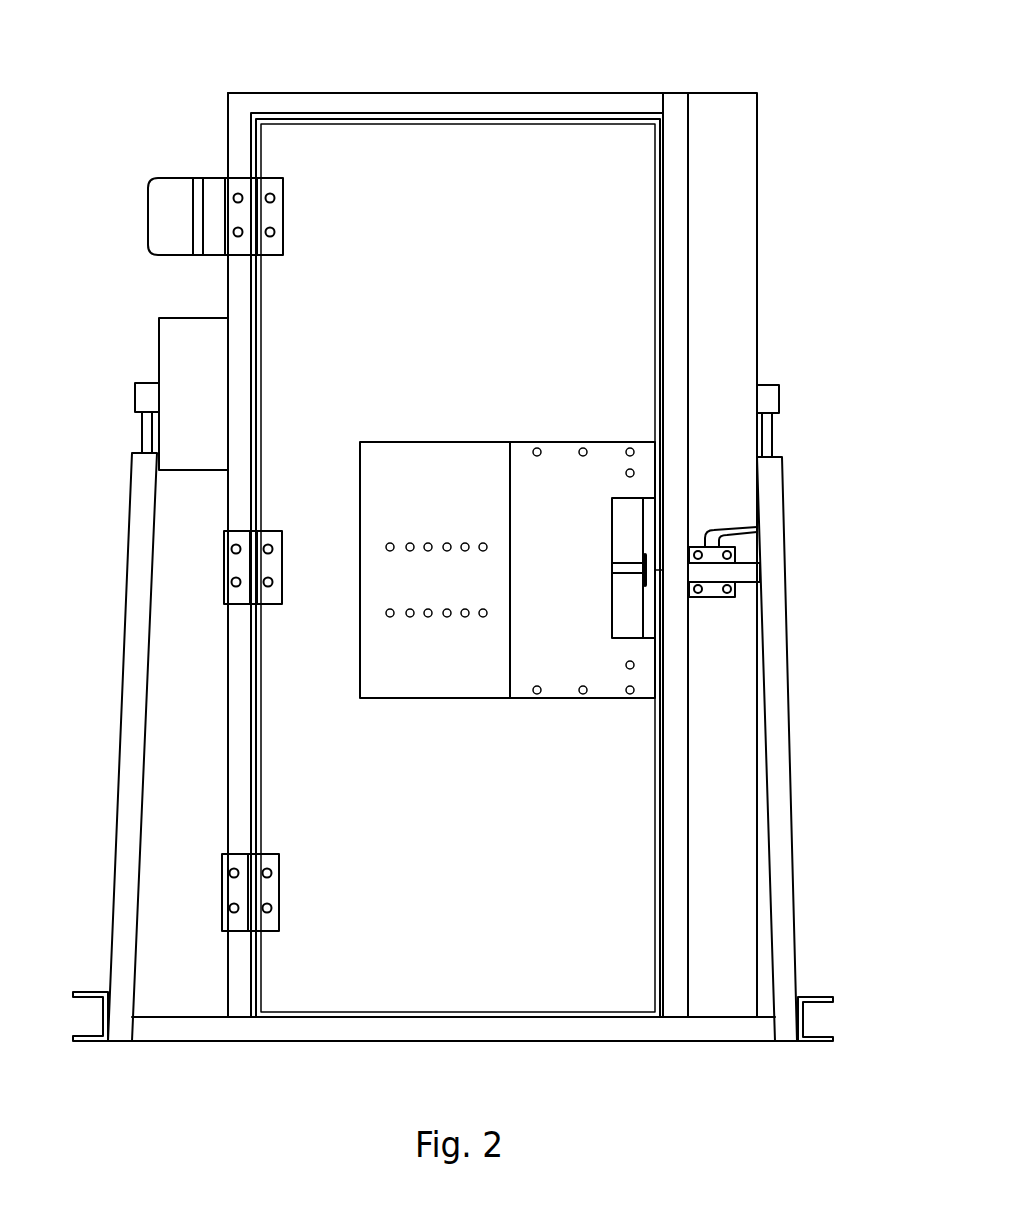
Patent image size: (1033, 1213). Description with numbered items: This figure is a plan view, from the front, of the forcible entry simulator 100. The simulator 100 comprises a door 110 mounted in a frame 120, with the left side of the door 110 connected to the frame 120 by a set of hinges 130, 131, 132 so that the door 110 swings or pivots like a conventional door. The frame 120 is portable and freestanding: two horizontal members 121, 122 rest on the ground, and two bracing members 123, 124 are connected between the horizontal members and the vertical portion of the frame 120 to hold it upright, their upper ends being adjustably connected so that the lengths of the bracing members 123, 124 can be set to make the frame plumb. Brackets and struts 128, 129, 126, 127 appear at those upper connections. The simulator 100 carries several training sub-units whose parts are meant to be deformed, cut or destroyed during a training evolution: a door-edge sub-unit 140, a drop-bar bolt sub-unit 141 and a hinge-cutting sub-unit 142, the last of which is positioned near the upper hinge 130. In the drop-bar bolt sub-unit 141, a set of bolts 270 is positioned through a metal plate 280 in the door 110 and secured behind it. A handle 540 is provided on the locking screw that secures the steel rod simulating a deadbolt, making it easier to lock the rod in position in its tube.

The simulator 100 is at (790, 70).
The door 110 is at (606, 176).
The frame 120 is at (473, 93).
The horizontal member 121 is at (100, 991).
The horizontal member 122 is at (818, 996).
The bracing member 123 is at (116, 832).
The bracing member 124 is at (791, 854).
The left strut 126 is at (140, 432).
The right strut 127 is at (778, 432).
The left mounting bracket 128 is at (133, 397).
The right mounting bracket 129 is at (783, 392).
The upper hinge 130 is at (285, 216).
The hinge 131 is at (285, 571).
The hinge 132 is at (286, 896).
The door-edge sub-unit 140 is at (598, 699).
The drop-bar bolt sub-unit 141 is at (466, 440).
The hinge-cutting sub-unit 142 is at (148, 213).
The bolts 270 is at (406, 541).
The metal plate 280 is at (377, 442).
The handle 540 is at (760, 525).